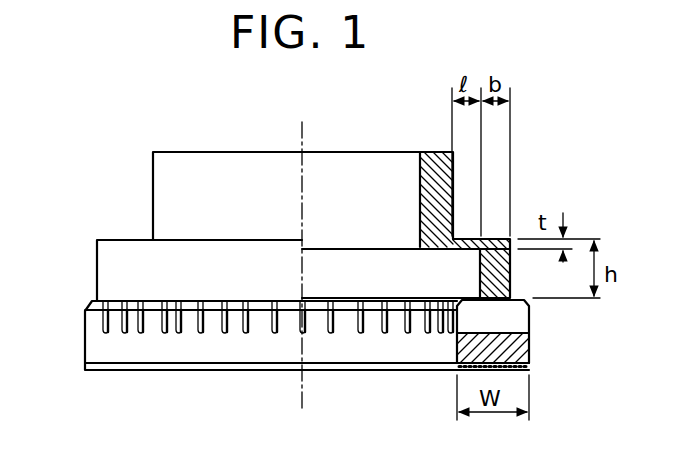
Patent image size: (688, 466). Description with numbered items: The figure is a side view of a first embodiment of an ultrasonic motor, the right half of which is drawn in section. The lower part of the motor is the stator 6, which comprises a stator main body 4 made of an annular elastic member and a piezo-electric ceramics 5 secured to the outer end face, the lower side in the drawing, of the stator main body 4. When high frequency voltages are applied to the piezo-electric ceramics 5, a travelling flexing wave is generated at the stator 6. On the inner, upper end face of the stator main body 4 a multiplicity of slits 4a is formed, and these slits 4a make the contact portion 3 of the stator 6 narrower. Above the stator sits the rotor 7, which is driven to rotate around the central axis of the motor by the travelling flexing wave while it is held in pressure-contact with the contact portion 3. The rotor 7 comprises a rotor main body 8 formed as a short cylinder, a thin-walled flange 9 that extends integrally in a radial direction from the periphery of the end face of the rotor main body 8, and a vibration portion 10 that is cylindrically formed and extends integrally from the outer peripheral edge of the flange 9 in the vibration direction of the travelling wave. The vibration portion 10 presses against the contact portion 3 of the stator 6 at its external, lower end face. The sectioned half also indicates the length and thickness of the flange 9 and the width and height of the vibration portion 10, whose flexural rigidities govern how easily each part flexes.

The contact portion 3 is at (486, 286).
The stator main body 4 is at (502, 344).
The slits 4a is at (506, 316).
The piezo-electric ceramics 5 is at (513, 372).
The stator 6 is at (81, 344).
The rotor 7 is at (139, 197).
The rotor main body 8 is at (440, 166).
The flange 9 is at (463, 238).
The vibration portion 10 is at (512, 268).